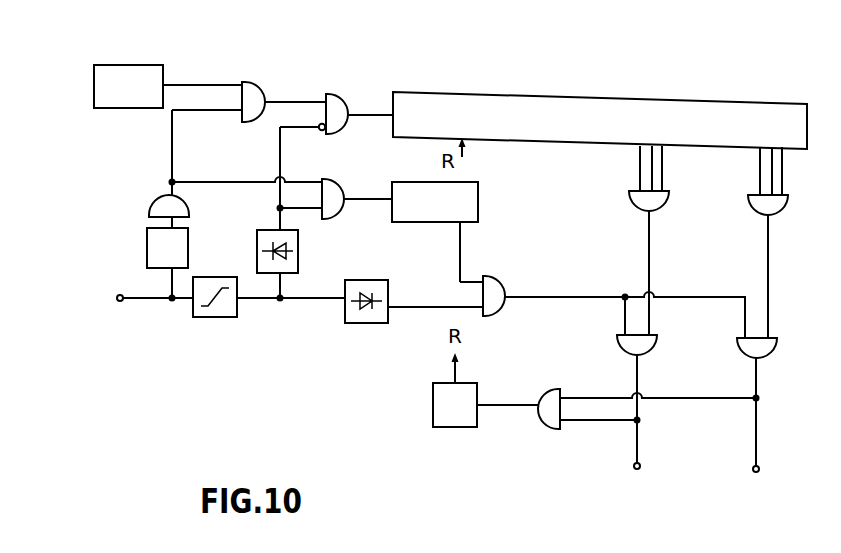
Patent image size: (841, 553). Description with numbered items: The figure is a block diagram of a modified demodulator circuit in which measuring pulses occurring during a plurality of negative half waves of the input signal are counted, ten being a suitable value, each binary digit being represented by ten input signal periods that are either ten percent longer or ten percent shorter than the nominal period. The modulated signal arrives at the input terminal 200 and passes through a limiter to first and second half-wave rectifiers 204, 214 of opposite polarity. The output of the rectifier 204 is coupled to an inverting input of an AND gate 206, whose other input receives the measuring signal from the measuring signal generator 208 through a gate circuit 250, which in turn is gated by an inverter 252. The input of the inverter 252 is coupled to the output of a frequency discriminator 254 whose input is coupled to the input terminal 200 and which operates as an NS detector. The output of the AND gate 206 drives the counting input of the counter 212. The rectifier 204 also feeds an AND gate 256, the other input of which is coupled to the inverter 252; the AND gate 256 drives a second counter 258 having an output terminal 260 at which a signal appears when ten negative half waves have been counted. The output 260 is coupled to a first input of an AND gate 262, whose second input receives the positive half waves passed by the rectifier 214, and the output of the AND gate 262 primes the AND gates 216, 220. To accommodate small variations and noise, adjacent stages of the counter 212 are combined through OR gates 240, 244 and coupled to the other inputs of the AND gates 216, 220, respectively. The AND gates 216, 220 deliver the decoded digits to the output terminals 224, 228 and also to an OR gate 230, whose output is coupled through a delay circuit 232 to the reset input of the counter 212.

The input terminal 200 is at (120, 301).
The half-wave rectifier 204 is at (298, 246).
The AND gate 206 is at (334, 108).
The measuring signal generator 208 is at (147, 71).
The counter 212 is at (430, 100).
The half-wave rectifier 214 is at (378, 325).
The AND gate 216 is at (624, 353).
The AND gate 220 is at (745, 353).
The output terminal 224 is at (638, 448).
The output terminal 228 is at (757, 455).
The OR gate 230 is at (541, 392).
The delay circuit 232 is at (455, 429).
The OR gate 240 is at (667, 196).
The OR gate 244 is at (772, 203).
The gate circuit 250 is at (252, 96).
The inverter 252 is at (158, 203).
The frequency discriminator 254 is at (150, 247).
The AND gate 256 is at (340, 188).
The second counter 258 is at (478, 212).
The output terminal 260 is at (459, 255).
The AND gate 262 is at (500, 290).